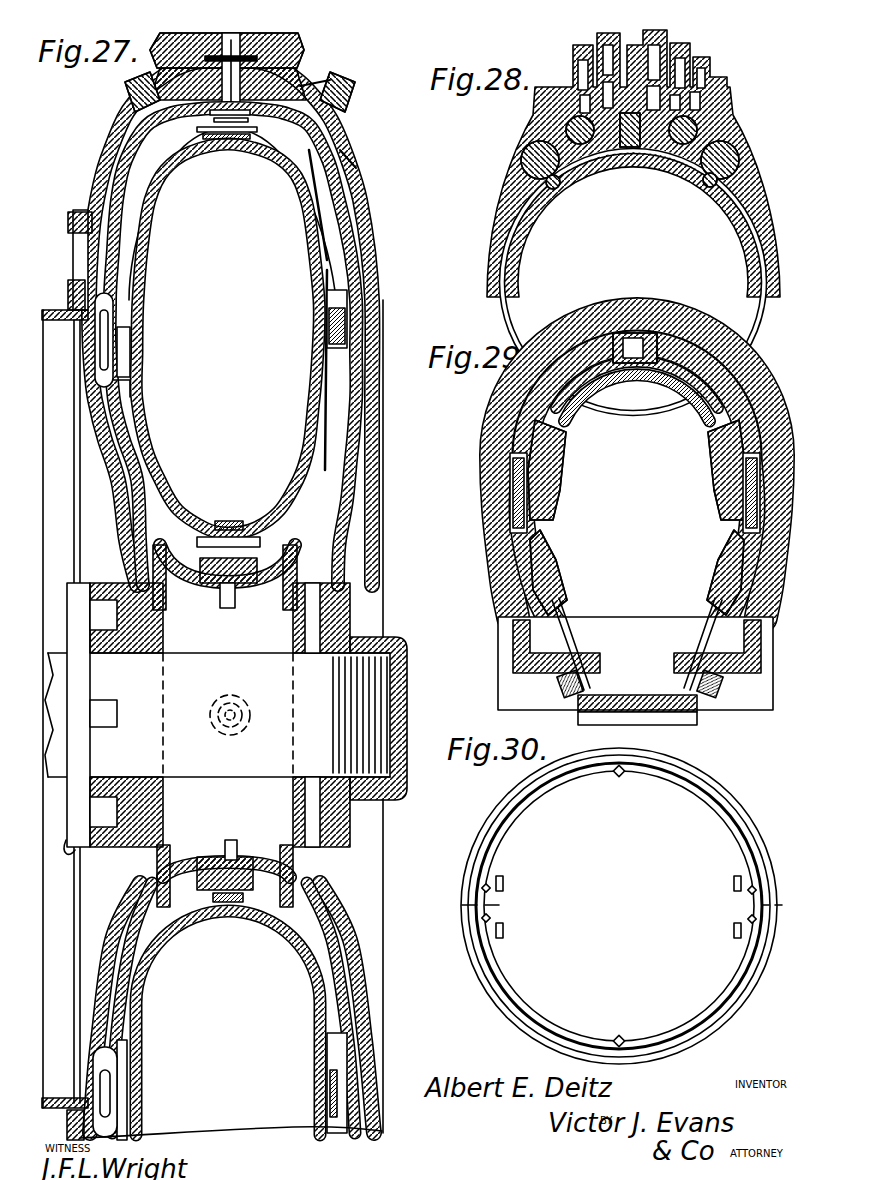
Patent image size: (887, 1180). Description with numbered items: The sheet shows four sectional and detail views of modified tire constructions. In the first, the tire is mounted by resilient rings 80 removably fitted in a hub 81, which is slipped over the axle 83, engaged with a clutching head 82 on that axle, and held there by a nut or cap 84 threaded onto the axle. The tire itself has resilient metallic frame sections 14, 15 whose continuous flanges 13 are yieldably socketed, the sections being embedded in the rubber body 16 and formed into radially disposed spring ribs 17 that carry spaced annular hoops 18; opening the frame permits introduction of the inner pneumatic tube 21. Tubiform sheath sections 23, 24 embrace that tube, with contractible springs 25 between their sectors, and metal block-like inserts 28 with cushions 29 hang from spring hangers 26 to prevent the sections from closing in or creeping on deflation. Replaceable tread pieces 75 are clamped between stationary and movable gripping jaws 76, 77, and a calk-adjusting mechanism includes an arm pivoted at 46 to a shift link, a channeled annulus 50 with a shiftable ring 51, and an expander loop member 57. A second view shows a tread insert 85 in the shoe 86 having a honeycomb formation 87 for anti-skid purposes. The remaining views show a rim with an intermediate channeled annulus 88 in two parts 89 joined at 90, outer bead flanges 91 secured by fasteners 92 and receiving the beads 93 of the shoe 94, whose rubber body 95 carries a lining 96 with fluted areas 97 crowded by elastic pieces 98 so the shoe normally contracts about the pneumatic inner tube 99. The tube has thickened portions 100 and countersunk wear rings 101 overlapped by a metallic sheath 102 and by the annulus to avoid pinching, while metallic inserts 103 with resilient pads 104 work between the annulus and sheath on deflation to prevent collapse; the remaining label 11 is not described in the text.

In FIG. 27, the lamp head assembly 11 is at (370, 171).
In FIG. 27, the continuous flanges 13 is at (130, 552).
In FIG. 27, the resilient metallic frame section 14 is at (92, 178).
In FIG. 27, the resilient metallic frame section 15 is at (380, 232).
In FIG. 27, the rubber body 16 is at (98, 136).
In FIG. 27, the spring ribs 17 is at (384, 255).
In FIG. 27, the annular hoops 18 is at (125, 104).
In FIG. 27, the inner pneumatic tube 21 is at (132, 262).
In FIG. 27, the tubiform sheath section 23 is at (262, 165).
In FIG. 27, the tubiform sheath section 24 is at (165, 492).
In FIG. 27, the contractible springs 25 is at (130, 300).
In FIG. 27, the spring hangers 26 is at (124, 236).
In FIG. 27, the block-like inserts 28 is at (215, 160).
In FIG. 27, the cushions 29 is at (330, 325).
In FIG. 27, the pivot 46 is at (330, 250).
In FIG. 27, the channeled annulus 50 is at (68, 285).
In FIG. 27, the shiftable ring 51 is at (68, 300).
In FIG. 27, the expander loop member 57 is at (72, 220).
In FIG. 27, the replaceable tread pieces 75 is at (231, 33).
In FIG. 27, the stationary gripping jaws 76 is at (318, 84).
In FIG. 27, the movable gripping jaws 77 is at (292, 47).
In FIG. 27, the resilient rings 80 is at (330, 580).
In FIG. 27, the hub 81 is at (118, 582).
In FIG. 27, the clutching head 82 is at (66, 855).
In FIG. 27, the axle 83 is at (335, 630).
In FIG. 27, the nut or cap 84 is at (392, 668).
In FIG. 28, the tread insert 85 is at (735, 108).
In FIG. 28, the shoe 86 is at (758, 180).
In FIG. 28, the honeycomb formation 87 is at (700, 50).
In FIG. 29, the intermediate channeled annulus 88 is at (630, 694).
In FIG. 30, the intermediate channeled annulus 88 is at (530, 988).
In FIG. 30, the annulus parts 89 is at (664, 786).
In FIG. 30, the joint 90 is at (503, 879).
In FIG. 29, the outer bead flanges 91 is at (506, 650).
In FIG. 30, the outer bead flanges 91 is at (734, 803).
In FIG. 29, the fasteners 92 is at (562, 687).
In FIG. 30, the fasteners 92 is at (490, 919).
In FIG. 29, the beads 93 is at (596, 652).
In FIG. 29, the shoe 94 is at (470, 527).
In FIG. 29, the rubber body 95 is at (790, 446).
In FIG. 29, the lining 96 is at (593, 320).
In FIG. 29, the fluted areas 97 is at (770, 388).
In FIG. 29, the elastic pieces 98 is at (745, 366).
In FIG. 29, the pneumatic inner tube 99 is at (602, 388).
In FIG. 29, the thickened portions 100 is at (708, 456).
In FIG. 29, the wear rings 101 is at (705, 432).
In FIG. 29, the metallic sheath 102 is at (677, 306).
In FIG. 29, the metallic inserts 103 is at (498, 508).
In FIG. 29, the resilient pads 104 is at (528, 505).